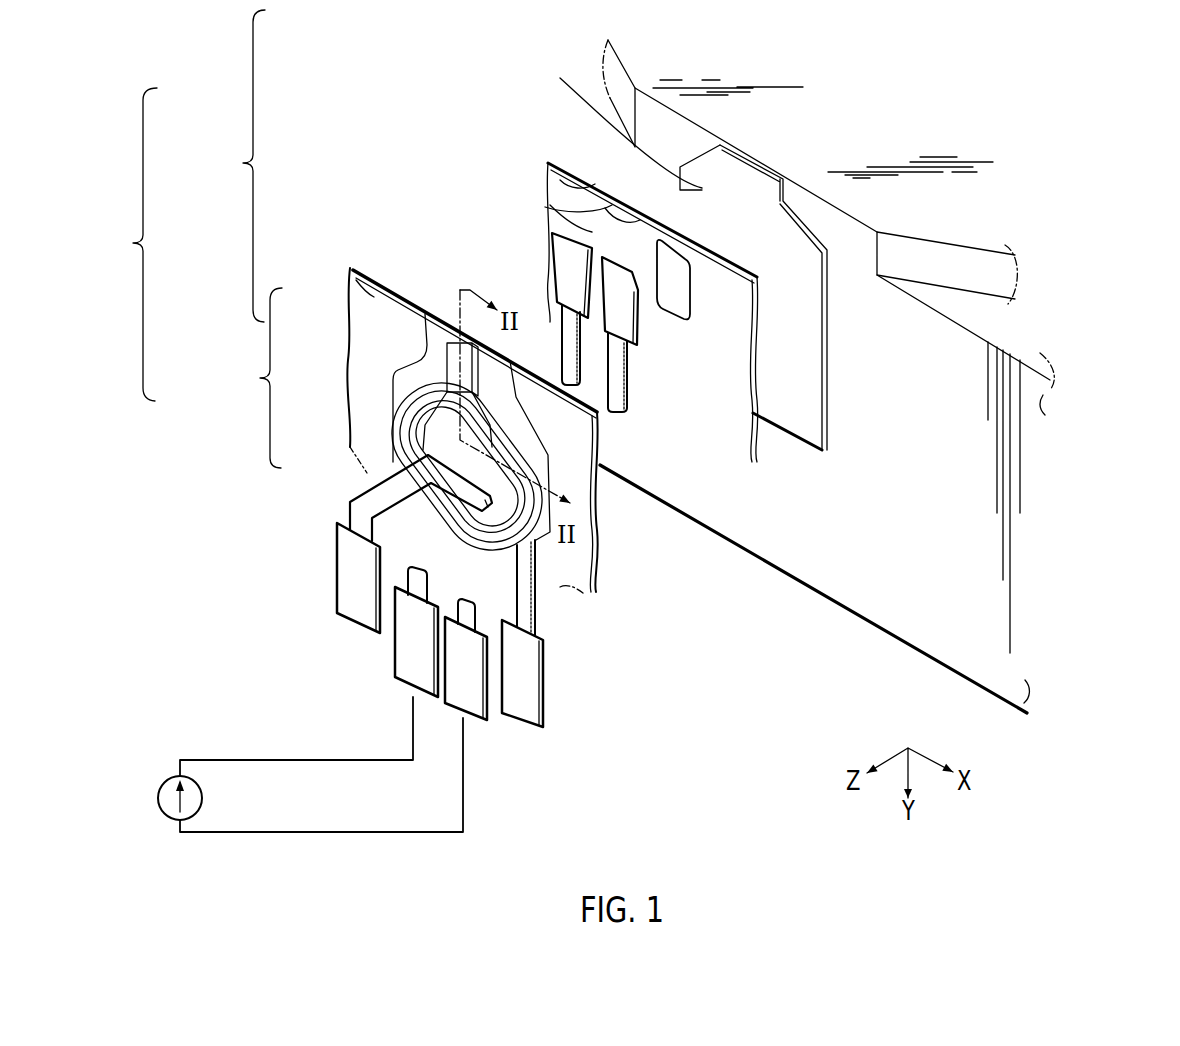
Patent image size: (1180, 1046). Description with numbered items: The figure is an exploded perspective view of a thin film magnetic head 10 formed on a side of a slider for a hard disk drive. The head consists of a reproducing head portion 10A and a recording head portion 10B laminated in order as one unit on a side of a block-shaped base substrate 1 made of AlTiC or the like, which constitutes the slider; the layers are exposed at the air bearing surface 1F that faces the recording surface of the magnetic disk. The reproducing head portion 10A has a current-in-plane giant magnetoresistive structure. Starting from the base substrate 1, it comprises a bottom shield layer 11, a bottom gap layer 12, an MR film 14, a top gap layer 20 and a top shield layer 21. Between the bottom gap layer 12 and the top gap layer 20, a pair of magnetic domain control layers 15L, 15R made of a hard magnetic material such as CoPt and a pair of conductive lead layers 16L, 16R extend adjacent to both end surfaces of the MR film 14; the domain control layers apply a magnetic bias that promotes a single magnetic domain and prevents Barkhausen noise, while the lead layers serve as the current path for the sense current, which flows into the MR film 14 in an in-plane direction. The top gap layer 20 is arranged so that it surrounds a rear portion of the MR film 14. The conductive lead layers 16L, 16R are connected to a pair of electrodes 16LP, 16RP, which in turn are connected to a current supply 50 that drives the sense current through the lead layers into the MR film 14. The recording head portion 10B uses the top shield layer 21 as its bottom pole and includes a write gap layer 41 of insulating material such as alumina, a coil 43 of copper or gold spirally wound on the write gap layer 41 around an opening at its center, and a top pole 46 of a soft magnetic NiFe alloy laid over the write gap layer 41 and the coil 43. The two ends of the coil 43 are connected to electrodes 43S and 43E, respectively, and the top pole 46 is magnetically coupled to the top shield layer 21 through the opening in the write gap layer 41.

The base substrate 1 is at (780, 562).
The air bearing surface 1F is at (835, 143).
The thin film magnetic head 10 is at (128, 244).
The reproducing head portion 10A is at (229, 166).
The recording head portion 10B is at (246, 378).
The bottom shield layer 11 is at (560, 78).
The bottom gap layer 12 is at (548, 177).
The MR film 14 is at (545, 207).
The magnetic domain control layer 15R is at (550, 208).
The conductive lead layer 16R is at (552, 243).
The magnetic domain control layer 15L is at (663, 247).
The conductive lead layer 16L is at (613, 326).
The top gap layer 20 is at (347, 268).
The top shield layer 21 is at (437, 355).
The write gap layer 41 is at (440, 377).
The coil 43 is at (442, 445).
The top pole 46 is at (367, 473).
The electrode 43S is at (357, 613).
The electrode 43E is at (520, 708).
The electrode 16RP is at (405, 672).
The electrode 16LP is at (463, 707).
The current source 50 is at (157, 797).